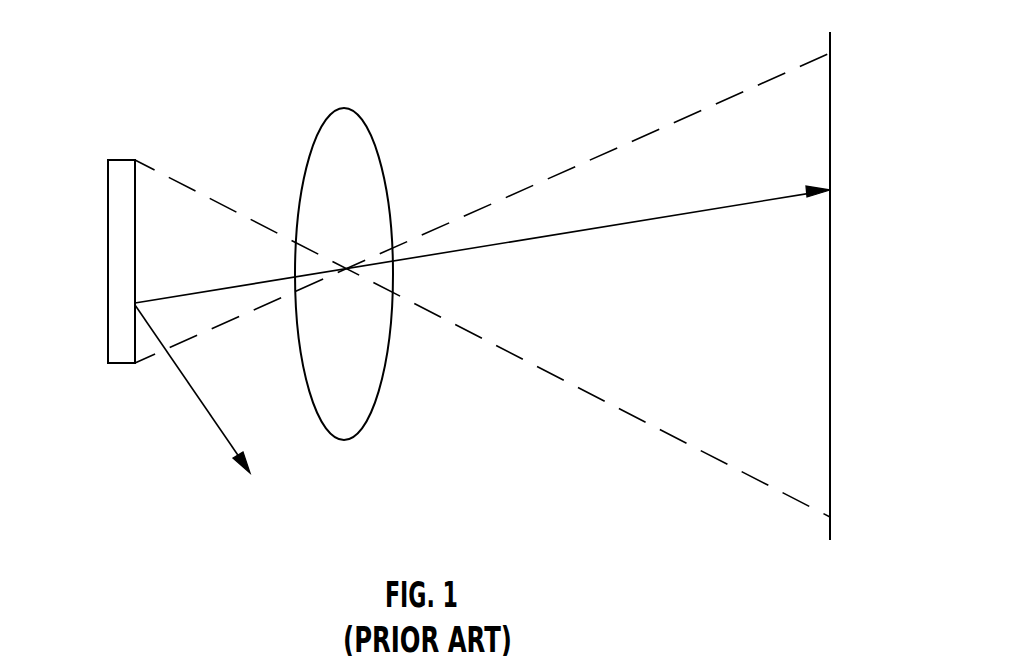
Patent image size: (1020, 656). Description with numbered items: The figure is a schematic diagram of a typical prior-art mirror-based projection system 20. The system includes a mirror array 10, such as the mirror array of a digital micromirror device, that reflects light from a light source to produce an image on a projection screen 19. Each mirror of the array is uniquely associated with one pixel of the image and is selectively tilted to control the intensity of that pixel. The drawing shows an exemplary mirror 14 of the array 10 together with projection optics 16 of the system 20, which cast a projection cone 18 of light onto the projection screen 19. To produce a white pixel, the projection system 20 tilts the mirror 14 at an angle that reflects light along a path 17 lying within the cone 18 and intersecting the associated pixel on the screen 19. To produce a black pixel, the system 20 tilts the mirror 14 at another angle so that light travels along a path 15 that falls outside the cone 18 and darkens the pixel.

The mirror array 10 is at (135, 160).
The mirror 14 is at (108, 297).
The path 15 is at (218, 433).
The projection optics 16 is at (357, 438).
The path 17 is at (482, 247).
The projection cone 18 is at (513, 355).
The projection screen 19 is at (830, 325).
The mirror-based projection system 20 is at (610, 56).